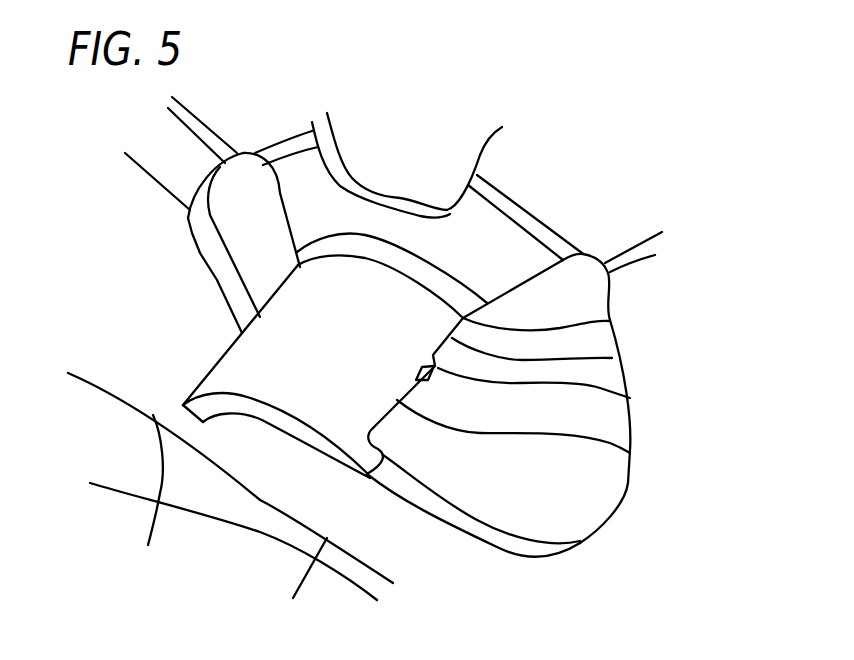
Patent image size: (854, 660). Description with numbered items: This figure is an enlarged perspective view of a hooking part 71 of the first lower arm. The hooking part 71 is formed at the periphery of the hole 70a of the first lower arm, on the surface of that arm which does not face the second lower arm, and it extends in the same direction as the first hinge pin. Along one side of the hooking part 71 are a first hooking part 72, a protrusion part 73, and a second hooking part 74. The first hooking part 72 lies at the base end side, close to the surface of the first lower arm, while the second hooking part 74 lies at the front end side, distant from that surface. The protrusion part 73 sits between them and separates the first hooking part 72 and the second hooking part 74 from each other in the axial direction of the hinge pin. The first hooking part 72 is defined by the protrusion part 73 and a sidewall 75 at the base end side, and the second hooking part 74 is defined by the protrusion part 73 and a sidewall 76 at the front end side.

The hole 70a is at (578, 497).
The hooking part 71 is at (365, 312).
The first hooking part 72 is at (612, 358).
The protrusion part 73 is at (630, 398).
The second hooking part 74 is at (630, 453).
The sidewall 75 is at (610, 321).
The sidewall 76 is at (385, 443).